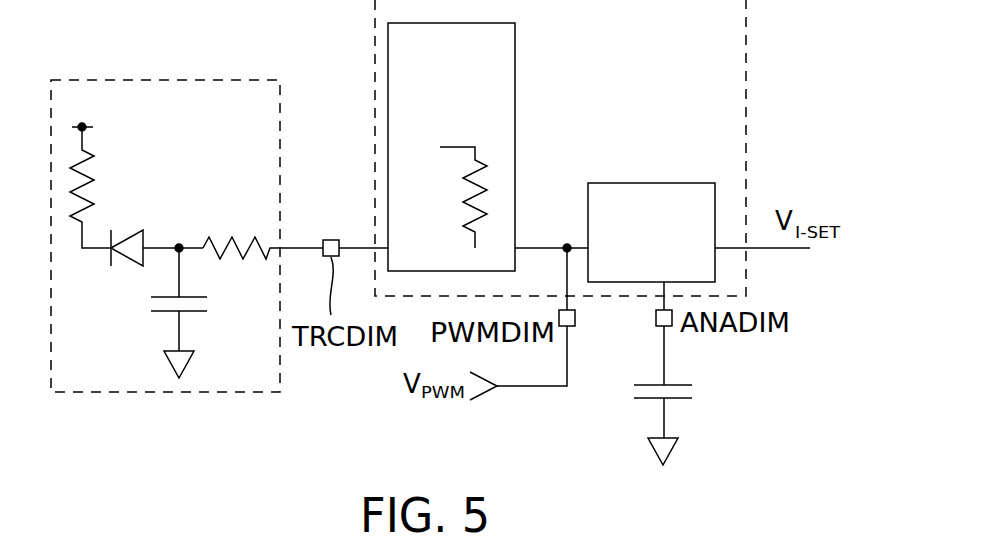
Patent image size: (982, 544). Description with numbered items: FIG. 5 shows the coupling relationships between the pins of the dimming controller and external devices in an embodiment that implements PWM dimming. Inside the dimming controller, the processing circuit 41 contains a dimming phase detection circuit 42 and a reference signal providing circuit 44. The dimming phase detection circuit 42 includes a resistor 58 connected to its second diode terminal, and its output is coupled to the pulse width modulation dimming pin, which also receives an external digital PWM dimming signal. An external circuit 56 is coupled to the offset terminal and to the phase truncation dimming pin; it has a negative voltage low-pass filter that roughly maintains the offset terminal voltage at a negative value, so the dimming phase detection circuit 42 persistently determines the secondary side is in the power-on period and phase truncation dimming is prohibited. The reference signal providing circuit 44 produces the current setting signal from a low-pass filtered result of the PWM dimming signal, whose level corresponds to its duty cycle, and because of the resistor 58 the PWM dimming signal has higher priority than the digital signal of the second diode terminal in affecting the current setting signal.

The processing circuit 41 is at (688, 60).
The dimming phase detection circuit 42 is at (465, 87).
The reference signal providing circuit 44 is at (666, 246).
The circuit 56 is at (190, 80).
The resistor 58 is at (462, 190).